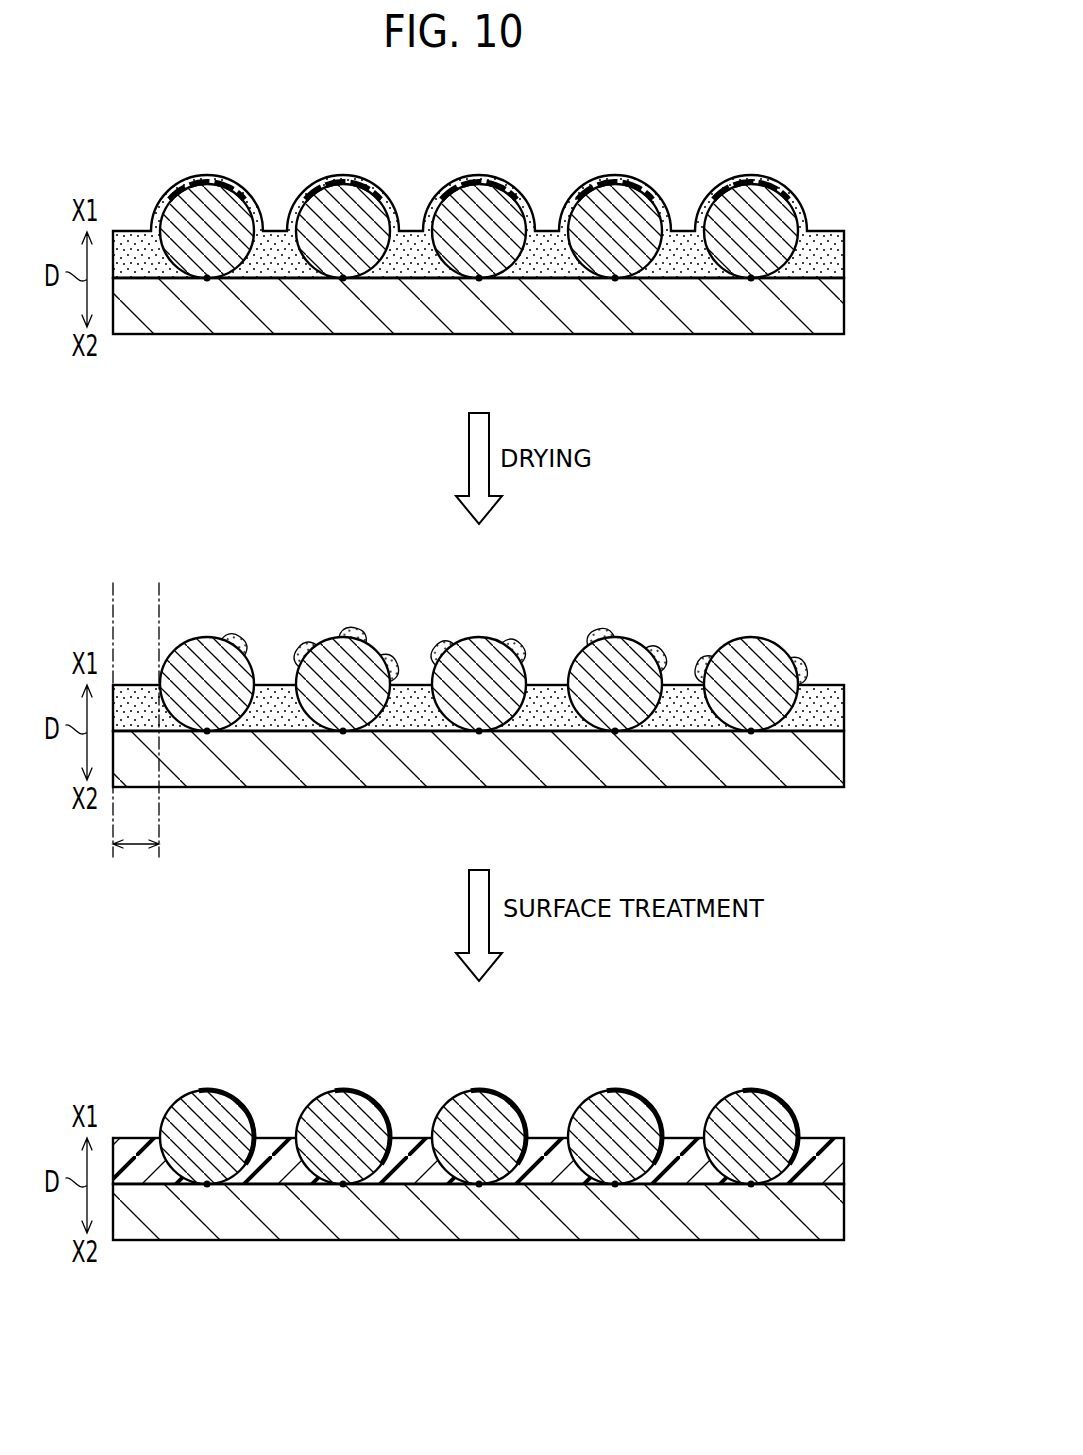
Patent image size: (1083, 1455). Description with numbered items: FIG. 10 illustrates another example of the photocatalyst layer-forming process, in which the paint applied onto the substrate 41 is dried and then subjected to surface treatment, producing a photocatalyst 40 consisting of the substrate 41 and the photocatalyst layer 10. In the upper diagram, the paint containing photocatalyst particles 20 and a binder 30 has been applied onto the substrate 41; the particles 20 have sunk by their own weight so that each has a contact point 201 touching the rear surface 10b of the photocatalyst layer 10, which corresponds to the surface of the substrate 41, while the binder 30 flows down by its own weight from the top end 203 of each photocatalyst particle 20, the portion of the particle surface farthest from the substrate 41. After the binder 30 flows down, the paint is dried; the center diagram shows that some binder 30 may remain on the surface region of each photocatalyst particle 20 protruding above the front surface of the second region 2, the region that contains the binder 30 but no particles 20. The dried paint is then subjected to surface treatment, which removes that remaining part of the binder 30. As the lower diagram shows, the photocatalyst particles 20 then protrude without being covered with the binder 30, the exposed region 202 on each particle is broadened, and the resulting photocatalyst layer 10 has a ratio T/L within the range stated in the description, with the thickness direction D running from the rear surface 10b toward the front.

The second region 2 is at (141, 850).
The photocatalyst layer 10 is at (782, 995).
The rear surface 10b is at (280, 280).
The photocatalyst particles 20 is at (235, 218).
The binder 30 is at (135, 248).
The photocatalyst 40 is at (569, 1289).
The substrate 41 is at (395, 315).
The contact point 201 is at (207, 280).
The exposed region 202 is at (200, 1092).
The top end 203 is at (210, 182).